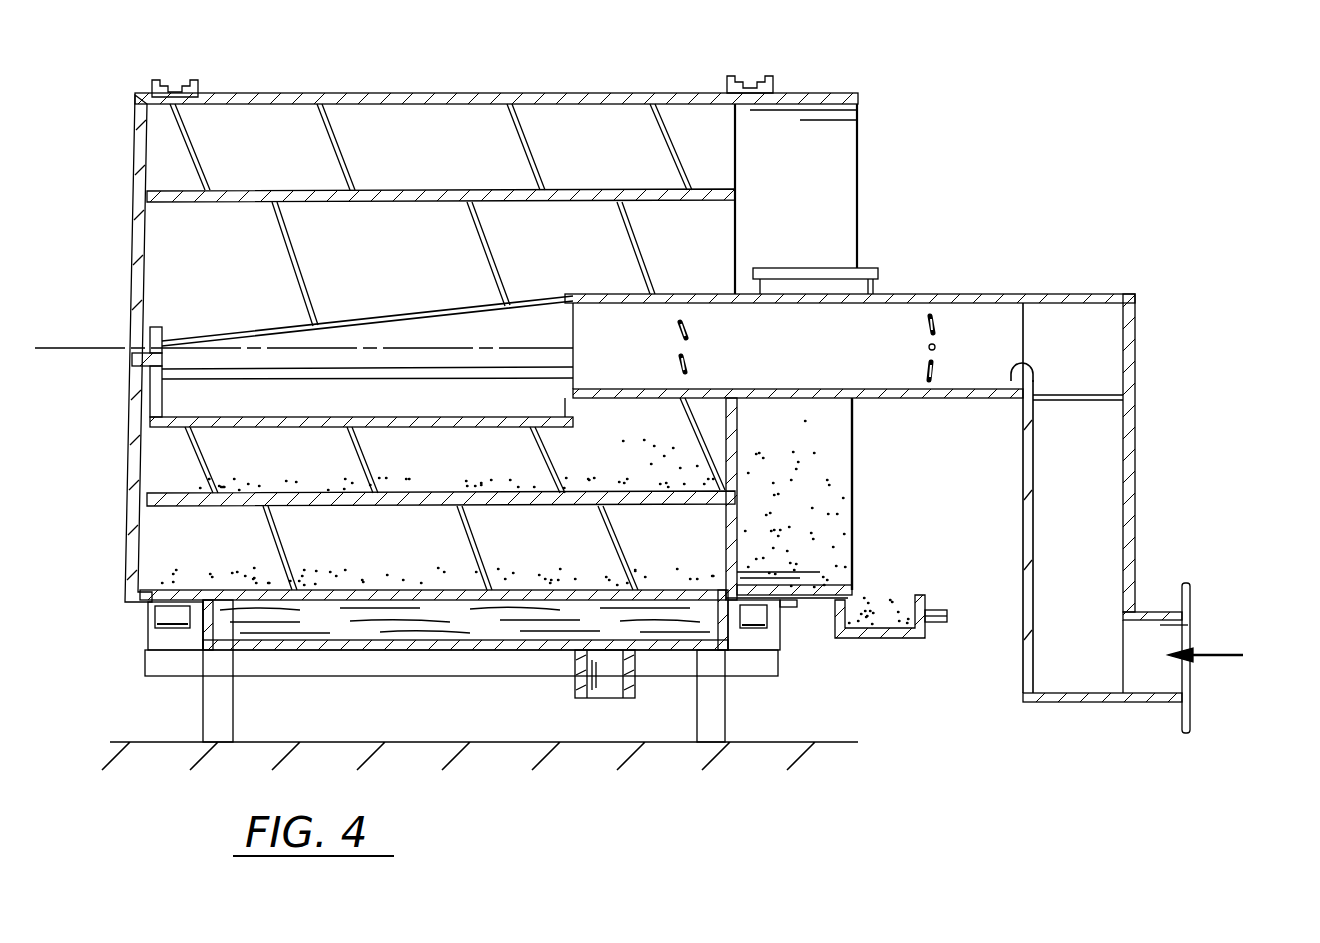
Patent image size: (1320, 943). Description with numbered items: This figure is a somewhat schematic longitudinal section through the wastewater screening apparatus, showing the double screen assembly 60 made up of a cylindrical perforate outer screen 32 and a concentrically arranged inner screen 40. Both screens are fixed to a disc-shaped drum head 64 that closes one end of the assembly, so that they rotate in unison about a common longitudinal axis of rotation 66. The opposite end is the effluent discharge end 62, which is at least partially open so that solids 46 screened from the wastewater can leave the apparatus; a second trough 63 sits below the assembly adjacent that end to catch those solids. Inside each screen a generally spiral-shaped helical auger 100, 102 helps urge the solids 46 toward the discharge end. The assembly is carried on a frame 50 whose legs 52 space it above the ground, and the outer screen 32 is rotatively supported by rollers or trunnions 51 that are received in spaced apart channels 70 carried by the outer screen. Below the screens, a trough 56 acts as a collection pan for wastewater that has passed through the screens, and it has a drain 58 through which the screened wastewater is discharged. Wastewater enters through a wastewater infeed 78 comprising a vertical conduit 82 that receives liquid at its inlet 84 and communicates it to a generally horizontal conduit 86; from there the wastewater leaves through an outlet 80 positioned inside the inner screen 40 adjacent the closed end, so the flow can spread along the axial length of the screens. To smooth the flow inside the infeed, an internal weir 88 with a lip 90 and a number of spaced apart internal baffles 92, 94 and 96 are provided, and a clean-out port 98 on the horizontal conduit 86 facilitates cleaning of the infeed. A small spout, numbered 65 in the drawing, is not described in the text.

The outer screen 32 is at (845, 93).
The inner screen 40 is at (703, 187).
The solids 46 is at (598, 582).
The frame 50 is at (150, 658).
The rollers 51 is at (168, 618).
The legs 52 is at (205, 700).
The trough 56 is at (366, 632).
The drain 58 is at (574, 684).
The double screen assembly 60 is at (706, 44).
The effluent discharge end 62 is at (828, 584).
The second trough 63 is at (876, 640).
The drum head 64 is at (156, 253).
The spout 65 is at (944, 607).
The longitudinal axis of rotation 66 is at (90, 308).
The channels 70 is at (181, 86).
The wastewater infeed 78 is at (1191, 602).
The outlet 80 is at (292, 409).
The vertical conduit 82 is at (1136, 460).
The inlet 84 is at (1180, 634).
The horizontal conduit 86 is at (1037, 293).
The internal weir 88 is at (1034, 380).
The lip 90 is at (1012, 364).
The internal baffle 92 is at (924, 320).
The internal baffle 94 is at (920, 369).
The internal baffle 96 is at (697, 365).
The clean-out port 98 is at (865, 268).
The helical auger 100 is at (540, 160).
The helical auger 102 is at (624, 246).